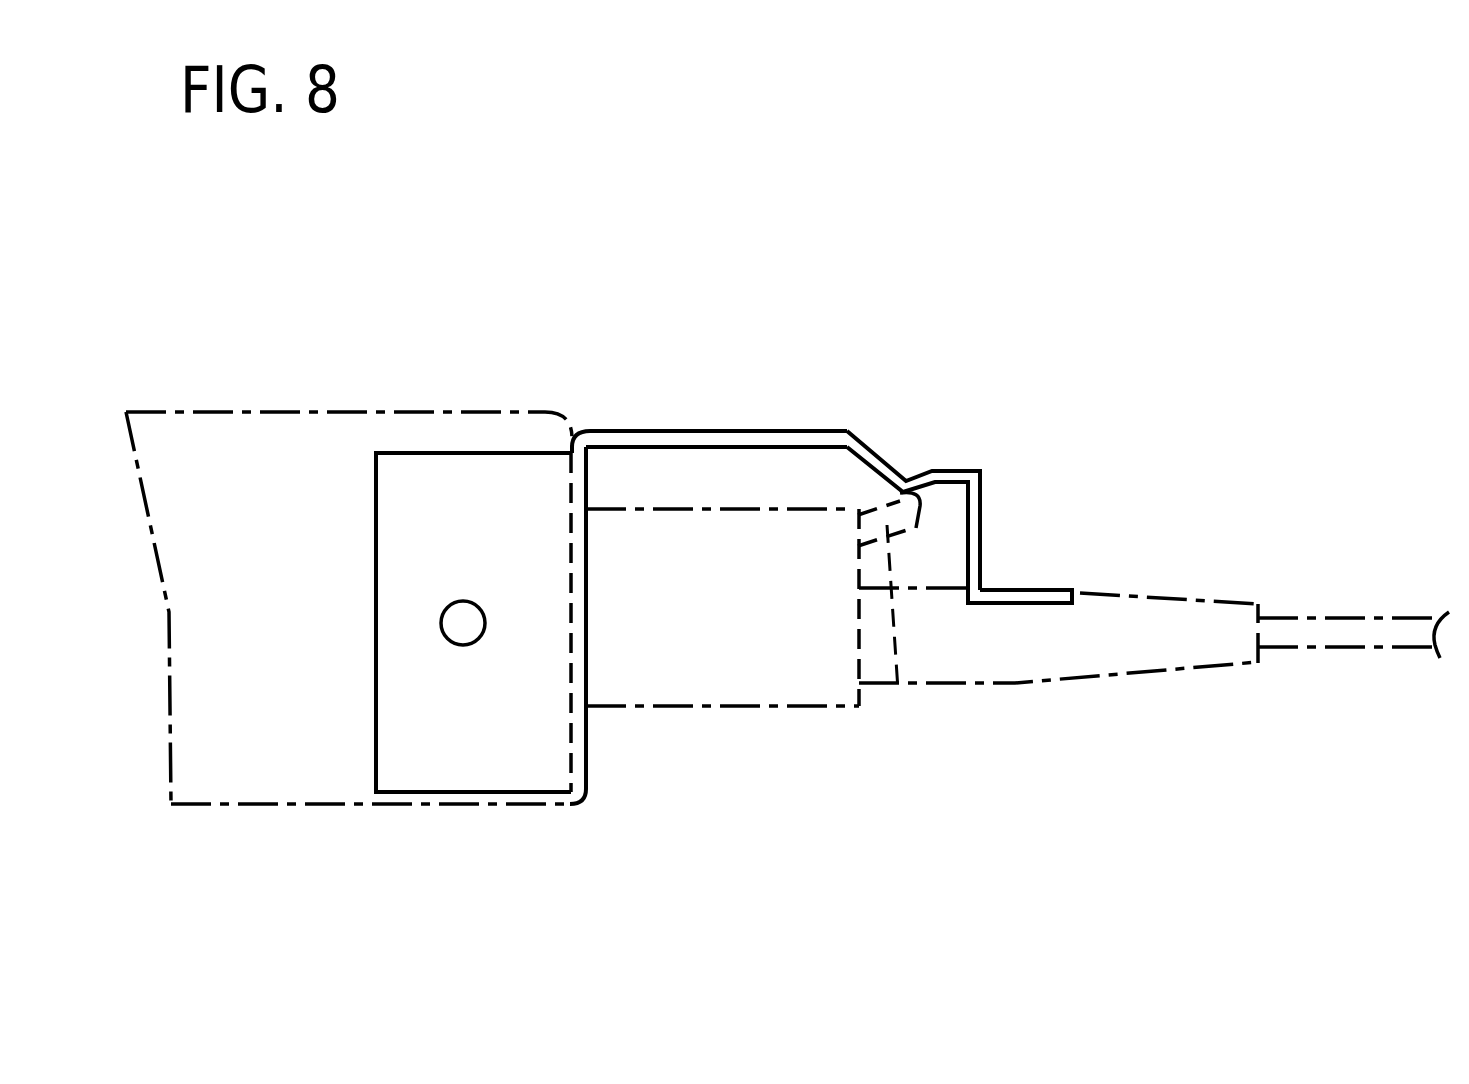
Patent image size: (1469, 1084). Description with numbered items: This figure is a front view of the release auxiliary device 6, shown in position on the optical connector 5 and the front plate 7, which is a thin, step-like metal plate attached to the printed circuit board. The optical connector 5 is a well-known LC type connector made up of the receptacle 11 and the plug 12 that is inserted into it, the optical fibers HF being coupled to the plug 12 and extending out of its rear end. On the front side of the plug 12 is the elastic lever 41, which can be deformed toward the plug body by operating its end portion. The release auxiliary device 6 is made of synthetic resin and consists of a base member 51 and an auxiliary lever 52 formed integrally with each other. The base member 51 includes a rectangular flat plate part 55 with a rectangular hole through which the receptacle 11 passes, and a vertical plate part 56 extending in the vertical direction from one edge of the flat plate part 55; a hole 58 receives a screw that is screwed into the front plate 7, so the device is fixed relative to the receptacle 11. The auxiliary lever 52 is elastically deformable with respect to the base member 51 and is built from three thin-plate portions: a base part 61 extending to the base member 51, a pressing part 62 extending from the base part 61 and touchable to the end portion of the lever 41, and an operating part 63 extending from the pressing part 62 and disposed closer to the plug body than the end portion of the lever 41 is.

The optical connector 5 is at (1047, 860).
The release auxiliary device 6 is at (786, 206).
The front plate 7 is at (332, 806).
The receptacle 11 is at (776, 706).
The plug 12 is at (985, 683).
The lever 41 is at (898, 690).
The base member 51 is at (658, 305).
The auxiliary lever 52 is at (1148, 298).
The flat plate part 55 is at (578, 492).
The vertical plate part 56 is at (500, 482).
The hole 58 is at (463, 623).
The base part 61 is at (763, 431).
The pressing part 62 is at (915, 476).
The operating part 63 is at (1032, 591).
The optical fibers HF is at (1387, 618).